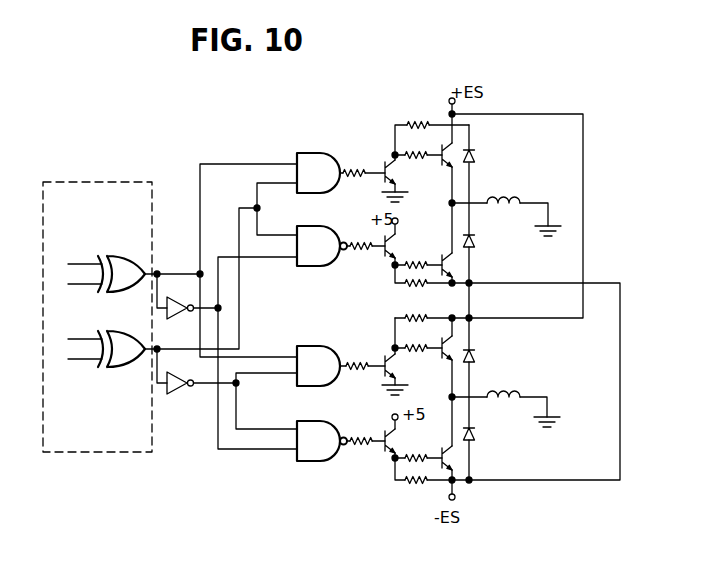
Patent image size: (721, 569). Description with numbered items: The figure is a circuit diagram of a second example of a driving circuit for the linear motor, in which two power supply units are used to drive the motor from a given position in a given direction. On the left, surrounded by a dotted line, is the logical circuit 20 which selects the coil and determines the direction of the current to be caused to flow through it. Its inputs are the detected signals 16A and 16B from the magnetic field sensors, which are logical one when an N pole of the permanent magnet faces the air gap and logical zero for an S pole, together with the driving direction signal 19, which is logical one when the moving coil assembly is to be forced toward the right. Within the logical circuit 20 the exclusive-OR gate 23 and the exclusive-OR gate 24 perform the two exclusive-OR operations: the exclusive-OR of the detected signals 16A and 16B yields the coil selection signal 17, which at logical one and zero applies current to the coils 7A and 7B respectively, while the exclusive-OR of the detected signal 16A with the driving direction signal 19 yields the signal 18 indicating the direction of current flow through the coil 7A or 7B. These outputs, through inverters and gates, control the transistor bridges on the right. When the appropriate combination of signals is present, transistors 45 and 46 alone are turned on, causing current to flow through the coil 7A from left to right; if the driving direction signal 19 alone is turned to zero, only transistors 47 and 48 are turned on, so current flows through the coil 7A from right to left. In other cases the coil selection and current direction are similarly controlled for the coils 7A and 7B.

The coil 7A is at (505, 195).
The coil 7B is at (503, 392).
The detected signal 16A is at (84, 264).
The detected signal 16B is at (80, 360).
The coil selection signal 17 is at (160, 346).
The current direction signal 18 is at (155, 271).
The driving direction signal 19 is at (87, 284).
The logical circuit 20 is at (92, 453).
The exclusive-OR gate 23 is at (116, 287).
The exclusive-OR gate 24 is at (115, 364).
The transistor 45 is at (385, 162).
The transistor 46 is at (445, 163).
The transistor 47 is at (391, 258).
The transistor 48 is at (450, 256).